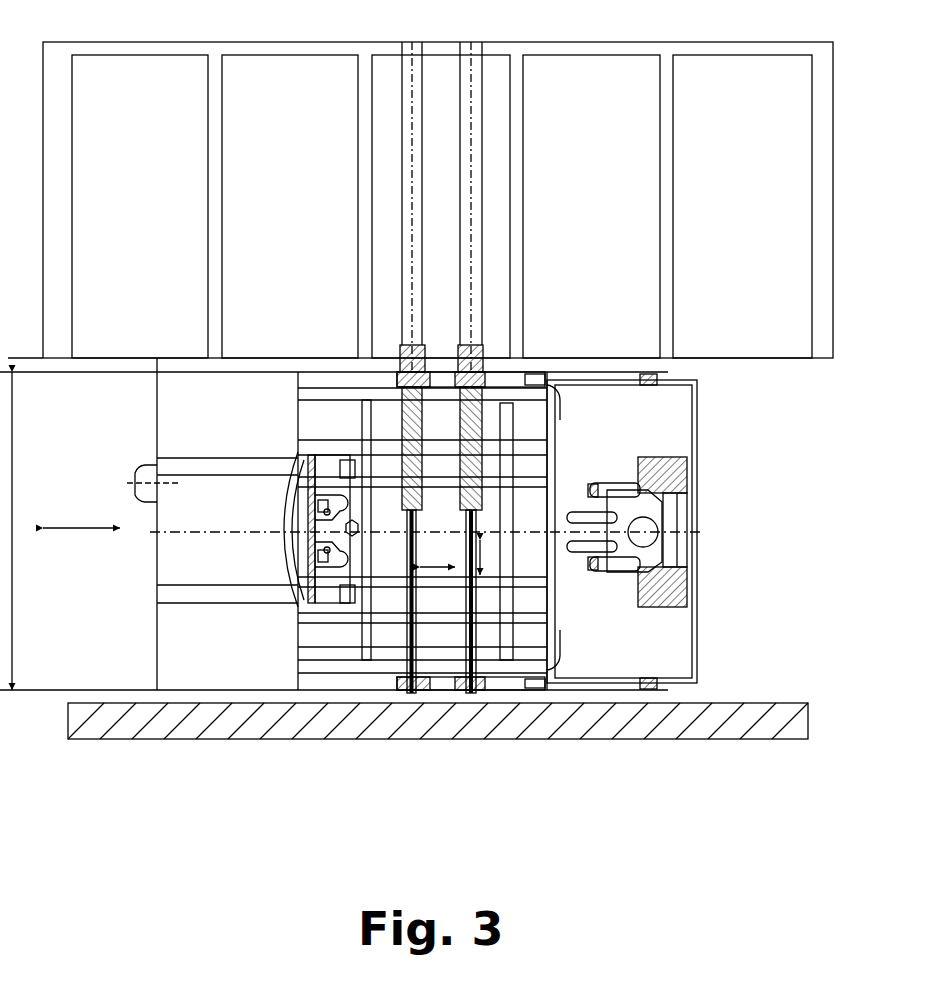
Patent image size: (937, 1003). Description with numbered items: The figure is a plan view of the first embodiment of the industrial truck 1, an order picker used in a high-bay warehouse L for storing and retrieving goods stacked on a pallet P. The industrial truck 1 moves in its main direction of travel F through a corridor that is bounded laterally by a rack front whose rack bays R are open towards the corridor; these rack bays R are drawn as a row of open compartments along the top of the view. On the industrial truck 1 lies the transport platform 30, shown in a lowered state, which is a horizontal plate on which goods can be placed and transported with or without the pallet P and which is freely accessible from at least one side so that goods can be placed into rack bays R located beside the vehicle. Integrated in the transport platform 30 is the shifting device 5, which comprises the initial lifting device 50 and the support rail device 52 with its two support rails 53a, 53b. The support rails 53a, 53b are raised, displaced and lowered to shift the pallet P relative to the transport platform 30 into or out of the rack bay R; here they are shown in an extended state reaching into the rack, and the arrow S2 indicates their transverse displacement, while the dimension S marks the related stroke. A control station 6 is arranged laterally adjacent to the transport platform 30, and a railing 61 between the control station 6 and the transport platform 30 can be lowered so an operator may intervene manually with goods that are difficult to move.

The industrial truck 1 is at (712, 632).
The shifting device 5 is at (375, 430).
The control station 6 is at (617, 472).
The transport platform 30 is at (483, 432).
The initial lifting device 50 is at (395, 567).
The support rail device 52 is at (508, 402).
The support rail 53a is at (400, 345).
The support rail 53b is at (482, 345).
The railing 61 is at (553, 460).
The main direction of travel F is at (81, 510).
The high-bay warehouse L is at (618, 723).
The pallet P is at (477, 147).
The rack bay R is at (512, 97).
The stroke S is at (488, 557).
The transverse displacement of support rail S2 is at (437, 556).